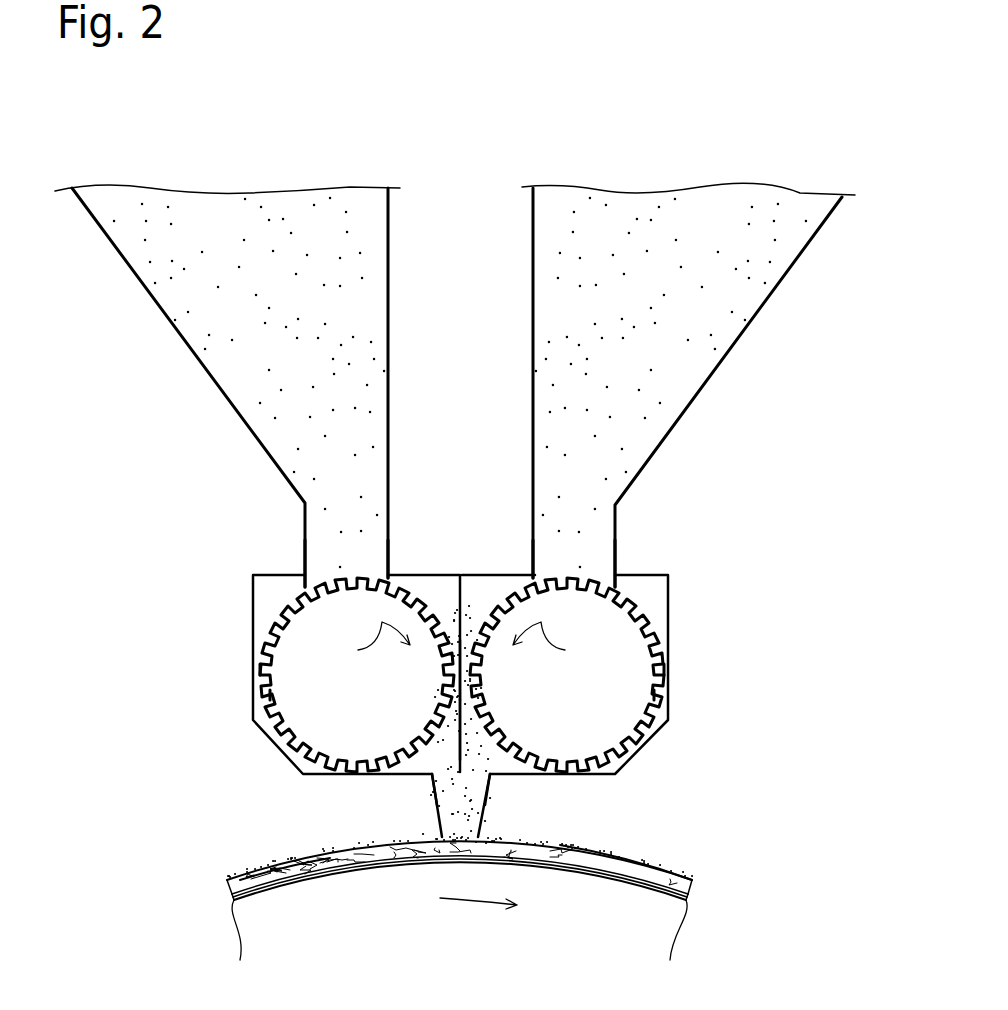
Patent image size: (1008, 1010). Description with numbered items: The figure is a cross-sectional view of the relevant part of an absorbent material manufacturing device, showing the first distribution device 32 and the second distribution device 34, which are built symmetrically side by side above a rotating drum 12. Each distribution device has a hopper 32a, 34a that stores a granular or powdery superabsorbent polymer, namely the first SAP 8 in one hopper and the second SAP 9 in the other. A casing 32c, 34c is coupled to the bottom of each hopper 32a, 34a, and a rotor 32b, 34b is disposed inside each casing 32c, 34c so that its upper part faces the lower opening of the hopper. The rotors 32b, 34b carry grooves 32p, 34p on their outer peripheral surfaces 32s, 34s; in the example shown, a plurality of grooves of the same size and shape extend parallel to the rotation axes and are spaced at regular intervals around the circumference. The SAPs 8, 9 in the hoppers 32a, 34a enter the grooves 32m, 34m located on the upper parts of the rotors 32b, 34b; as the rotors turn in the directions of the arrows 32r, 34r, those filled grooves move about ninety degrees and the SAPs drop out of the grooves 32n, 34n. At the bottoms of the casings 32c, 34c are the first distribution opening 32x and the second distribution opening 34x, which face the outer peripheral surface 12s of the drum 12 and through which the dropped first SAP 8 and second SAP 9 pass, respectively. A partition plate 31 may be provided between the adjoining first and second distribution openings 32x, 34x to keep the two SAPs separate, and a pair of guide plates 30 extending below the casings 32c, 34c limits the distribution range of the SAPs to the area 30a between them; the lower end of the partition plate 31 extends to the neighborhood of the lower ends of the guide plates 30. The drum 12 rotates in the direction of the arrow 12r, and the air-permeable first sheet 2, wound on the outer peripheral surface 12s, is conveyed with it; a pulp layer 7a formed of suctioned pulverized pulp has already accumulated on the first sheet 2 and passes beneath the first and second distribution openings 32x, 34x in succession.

The first distribution device 32 is at (227, 337).
The second distribution device 34 is at (688, 338).
The hopper 32a is at (158, 312).
The hopper 34a is at (757, 317).
The first SAP 8 is at (282, 434).
The second SAP 9 is at (618, 434).
The grooves 32m is at (340, 578).
The grooves 34m is at (577, 578).
The grooves 32n is at (455, 660).
The grooves 34n is at (470, 660).
The arrow 32r is at (363, 644).
The arrow 34r is at (554, 644).
The casing 32c is at (253, 596).
The casing 34c is at (668, 597).
The rotor 32b is at (290, 647).
The rotor 34b is at (645, 642).
The grooves 32p is at (263, 668).
The grooves 34p is at (662, 670).
The outer peripheral surface 32s is at (258, 698).
The outer peripheral surface 34s is at (663, 697).
The first distribution opening 32x is at (440, 776).
The second distribution opening 34x is at (484, 776).
The partition plate 31 is at (461, 806).
The guide plates 30 is at (484, 818).
The area 30a is at (465, 860).
The pulp layer 7a is at (258, 875).
The first sheet 2 is at (285, 887).
The outer peripheral surface 12s is at (650, 875).
The arrow 12r is at (462, 899).
The drum 12 is at (479, 912).